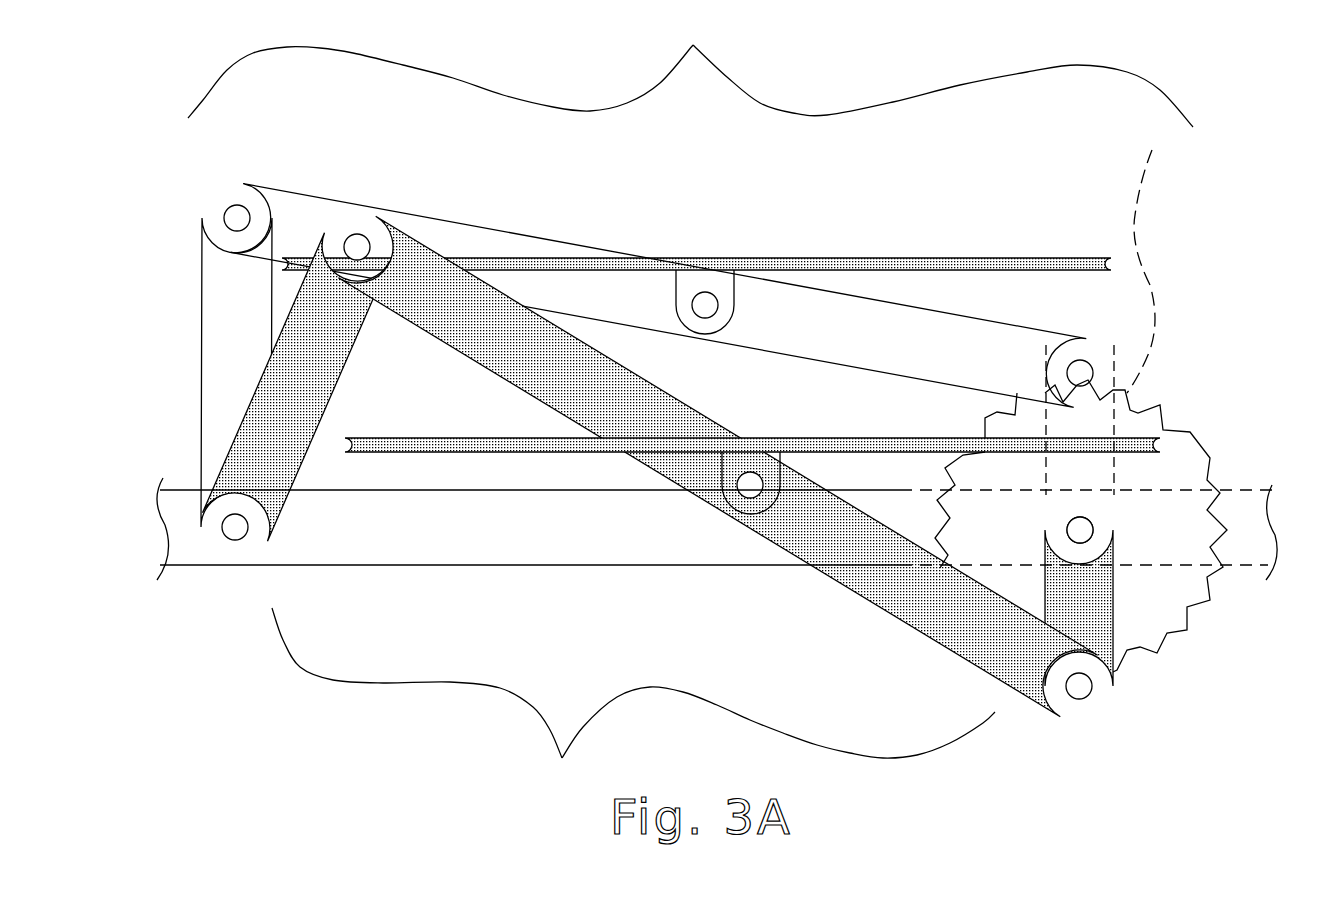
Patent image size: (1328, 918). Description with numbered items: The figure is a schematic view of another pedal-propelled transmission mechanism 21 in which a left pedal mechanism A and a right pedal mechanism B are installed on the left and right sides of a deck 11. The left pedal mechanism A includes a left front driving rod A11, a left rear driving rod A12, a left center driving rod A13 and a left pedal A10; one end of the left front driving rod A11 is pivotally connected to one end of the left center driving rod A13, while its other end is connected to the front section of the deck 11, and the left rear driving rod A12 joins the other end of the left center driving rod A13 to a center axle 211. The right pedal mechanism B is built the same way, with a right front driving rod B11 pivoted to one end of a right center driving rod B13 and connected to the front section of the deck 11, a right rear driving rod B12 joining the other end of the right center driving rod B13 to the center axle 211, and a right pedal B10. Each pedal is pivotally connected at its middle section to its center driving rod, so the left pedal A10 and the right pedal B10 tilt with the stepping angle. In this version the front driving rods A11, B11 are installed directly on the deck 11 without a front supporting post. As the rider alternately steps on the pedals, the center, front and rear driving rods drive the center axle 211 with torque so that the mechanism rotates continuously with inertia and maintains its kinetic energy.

The deck 11 is at (182, 527).
The support member 21 is at (1187, 627).
The center axle 211 is at (1093, 532).
The left pedal mechanism A is at (633, 698).
The left pedal A10 is at (550, 450).
The left front driving rod A11 is at (290, 450).
The left rear driving rod A12 is at (1045, 592).
The left center driving rod A13 is at (800, 560).
The right pedal mechanism B is at (690, 74).
The right pedal B10 is at (760, 262).
The right front driving rod B11 is at (223, 280).
The right rear driving rod B12 is at (1150, 257).
The right center driving rod B13 is at (480, 245).